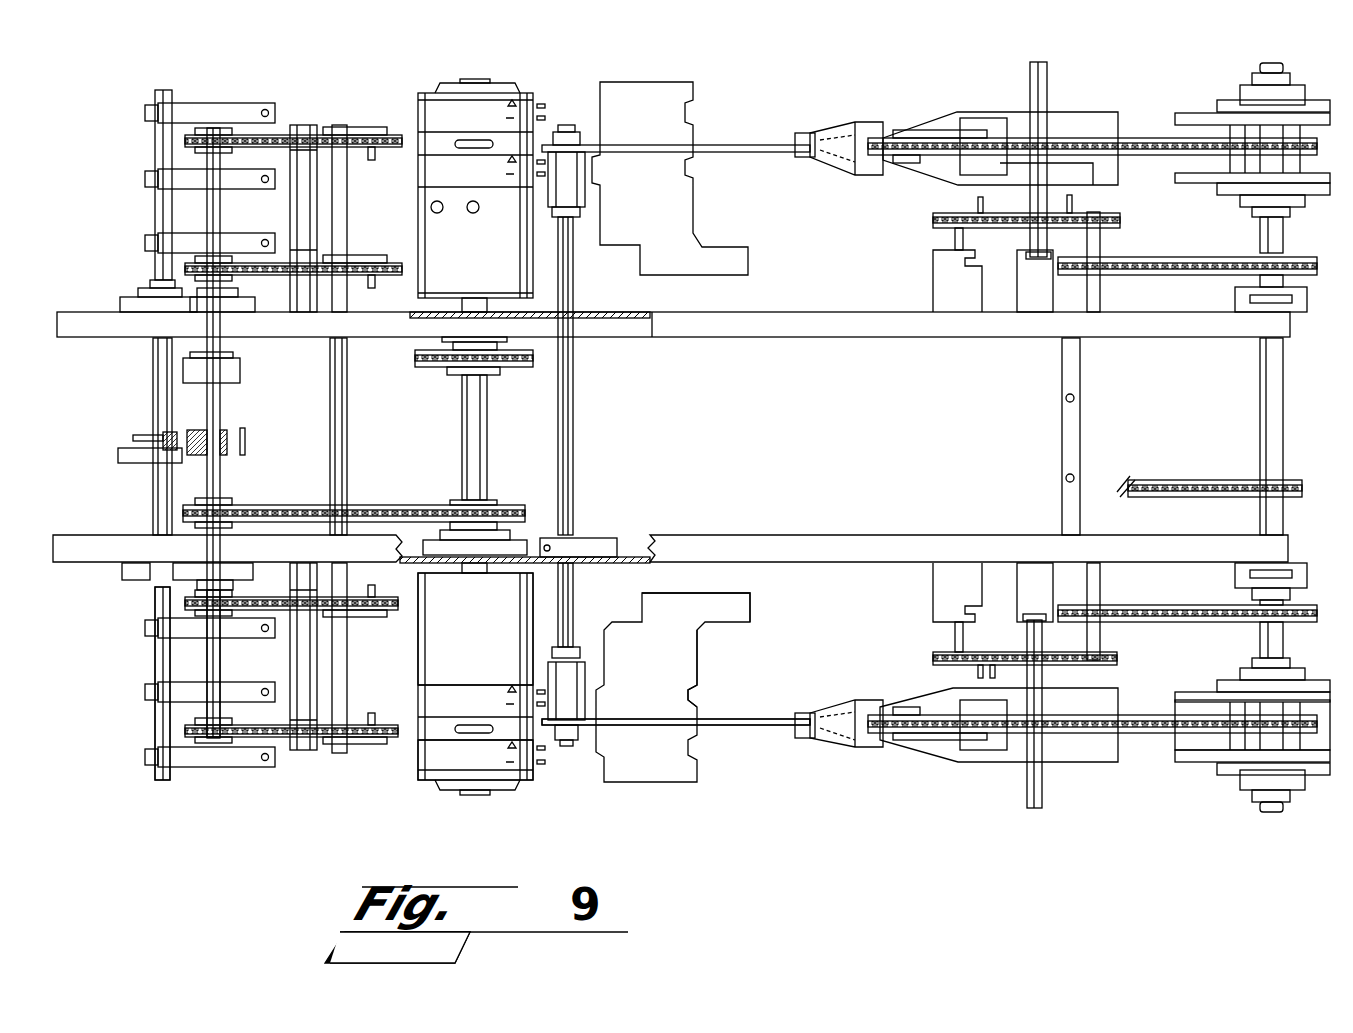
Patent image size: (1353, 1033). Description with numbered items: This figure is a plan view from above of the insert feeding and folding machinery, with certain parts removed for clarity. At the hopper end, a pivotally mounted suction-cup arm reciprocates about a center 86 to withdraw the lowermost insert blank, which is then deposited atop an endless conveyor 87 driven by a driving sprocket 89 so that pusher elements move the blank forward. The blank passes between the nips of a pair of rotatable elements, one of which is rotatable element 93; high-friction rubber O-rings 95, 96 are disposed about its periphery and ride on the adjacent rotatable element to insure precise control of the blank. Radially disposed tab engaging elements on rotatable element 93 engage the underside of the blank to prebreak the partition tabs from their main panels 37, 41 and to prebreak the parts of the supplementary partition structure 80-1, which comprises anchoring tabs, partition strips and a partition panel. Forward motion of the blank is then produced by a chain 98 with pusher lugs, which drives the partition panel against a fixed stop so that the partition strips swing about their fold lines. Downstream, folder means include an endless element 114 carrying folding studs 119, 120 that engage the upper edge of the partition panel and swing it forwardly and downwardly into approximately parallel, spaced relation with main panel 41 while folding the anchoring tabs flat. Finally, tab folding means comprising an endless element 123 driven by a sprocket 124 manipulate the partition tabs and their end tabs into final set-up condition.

The center 86 is at (162, 779).
The endless conveyor 87 is at (388, 615).
The driving sprocket 89 is at (233, 593).
The rotatable element 93 is at (515, 790).
The O-ring 95 is at (420, 790).
The O-ring 96 is at (482, 683).
The main panel 37 is at (655, 770).
The main panel 41 is at (672, 662).
The supplementary partition structure 80-1 is at (725, 603).
The chain 98 is at (748, 732).
The endless element 114 is at (997, 652).
The folding stud 119 is at (978, 673).
The folding stud 120 is at (990, 686).
The endless element 123 is at (1143, 735).
The sprocket 124 is at (885, 713).